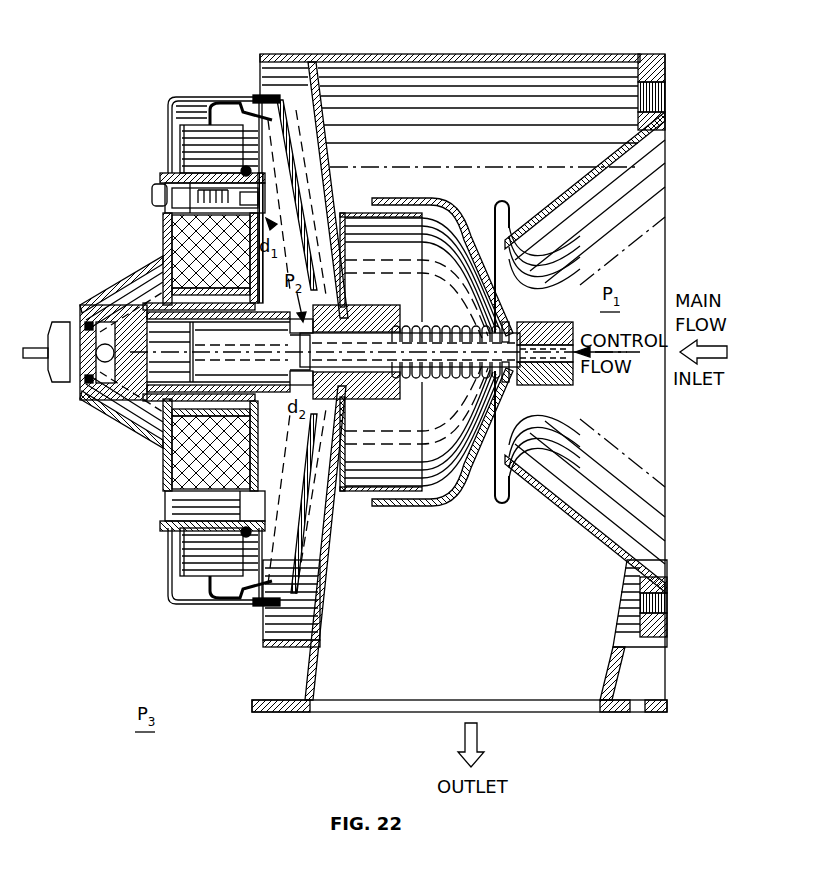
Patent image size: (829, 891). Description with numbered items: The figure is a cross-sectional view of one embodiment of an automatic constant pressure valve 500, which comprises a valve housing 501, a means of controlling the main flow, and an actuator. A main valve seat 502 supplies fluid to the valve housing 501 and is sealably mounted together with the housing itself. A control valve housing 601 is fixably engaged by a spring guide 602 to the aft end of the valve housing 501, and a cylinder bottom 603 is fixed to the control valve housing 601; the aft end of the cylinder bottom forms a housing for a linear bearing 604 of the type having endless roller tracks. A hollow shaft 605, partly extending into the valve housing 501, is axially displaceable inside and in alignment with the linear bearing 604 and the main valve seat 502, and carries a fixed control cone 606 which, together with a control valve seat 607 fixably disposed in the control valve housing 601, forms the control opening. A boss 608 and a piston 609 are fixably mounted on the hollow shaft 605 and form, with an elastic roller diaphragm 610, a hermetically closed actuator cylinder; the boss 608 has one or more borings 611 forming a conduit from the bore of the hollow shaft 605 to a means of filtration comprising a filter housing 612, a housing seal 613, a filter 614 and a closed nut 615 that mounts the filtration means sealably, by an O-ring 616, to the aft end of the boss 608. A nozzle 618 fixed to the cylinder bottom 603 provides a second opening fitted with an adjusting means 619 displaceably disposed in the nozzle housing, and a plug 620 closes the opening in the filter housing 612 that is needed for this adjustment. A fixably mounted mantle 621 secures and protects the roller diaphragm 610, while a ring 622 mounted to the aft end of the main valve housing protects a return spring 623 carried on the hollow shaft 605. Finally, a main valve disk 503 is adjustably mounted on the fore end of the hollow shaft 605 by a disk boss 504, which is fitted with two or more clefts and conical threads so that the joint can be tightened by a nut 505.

The constant pressure valve 500 is at (407, 51).
The valve housing 501 is at (577, 56).
The main valve seat 502 is at (572, 515).
The main valve disk 503 is at (448, 500).
The disk boss 504 is at (530, 325).
The nut 505 is at (548, 395).
The control valve housing 601 is at (300, 400).
The spring guide 602 is at (400, 398).
The cylinder bottom 603 is at (330, 585).
The linear bearing 604 is at (285, 432).
The hollow shaft 605 is at (465, 345).
The control cone 606 is at (332, 352).
The control valve seat 607 is at (284, 384).
The boss 608 is at (134, 315).
The piston 609 is at (205, 585).
The roller diaphragm 610 is at (201, 96).
The boring 611 is at (104, 372).
The filter housing 612 is at (160, 520).
The housing seal 613 is at (240, 537).
The filter 614 is at (172, 448).
The closed nut 615 is at (63, 373).
The O-ring 616 is at (78, 318).
The nozzle 618 is at (212, 178).
The adjusting means 619 is at (170, 235).
The plug 620 is at (160, 196).
The mantle 621 is at (170, 115).
The ring 622 is at (360, 495).
The return spring 623 is at (503, 384).